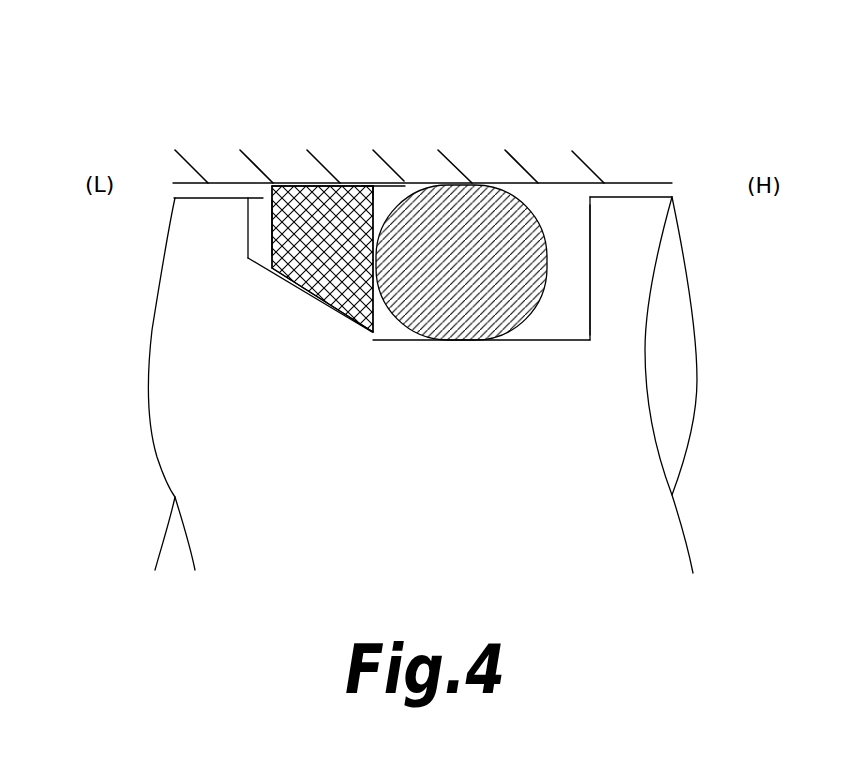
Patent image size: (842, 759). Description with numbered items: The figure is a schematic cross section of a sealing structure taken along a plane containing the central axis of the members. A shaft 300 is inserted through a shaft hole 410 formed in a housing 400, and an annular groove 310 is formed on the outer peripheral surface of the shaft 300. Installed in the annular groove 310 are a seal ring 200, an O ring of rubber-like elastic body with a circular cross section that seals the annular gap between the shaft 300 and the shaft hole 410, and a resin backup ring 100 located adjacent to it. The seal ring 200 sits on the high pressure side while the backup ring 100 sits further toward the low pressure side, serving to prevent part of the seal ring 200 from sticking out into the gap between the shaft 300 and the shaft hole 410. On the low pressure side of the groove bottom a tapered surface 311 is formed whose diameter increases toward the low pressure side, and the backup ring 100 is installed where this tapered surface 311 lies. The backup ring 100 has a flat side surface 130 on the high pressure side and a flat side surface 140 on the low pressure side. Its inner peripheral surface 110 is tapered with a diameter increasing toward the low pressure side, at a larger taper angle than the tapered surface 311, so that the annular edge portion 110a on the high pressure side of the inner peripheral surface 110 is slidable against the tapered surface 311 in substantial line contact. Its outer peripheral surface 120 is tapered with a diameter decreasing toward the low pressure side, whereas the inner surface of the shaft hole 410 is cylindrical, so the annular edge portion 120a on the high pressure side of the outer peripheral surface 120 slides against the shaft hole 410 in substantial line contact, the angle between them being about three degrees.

The backup ring 100 is at (266, 243).
The inner peripheral surface 110 is at (327, 287).
The annular edge portion 110a is at (374, 330).
The outer peripheral surface 120 is at (295, 186).
The annular edge portion 120a is at (375, 190).
The side surface on the high pressure side 130 is at (392, 193).
The side surface on the low pressure side 140 is at (272, 226).
The seal ring 200 is at (483, 313).
The shaft 300 is at (422, 385).
The annular groove 310 is at (579, 292).
The tapered surface 311 is at (265, 263).
The housing 400 is at (422, 145).
The shaft hole 410 is at (540, 183).